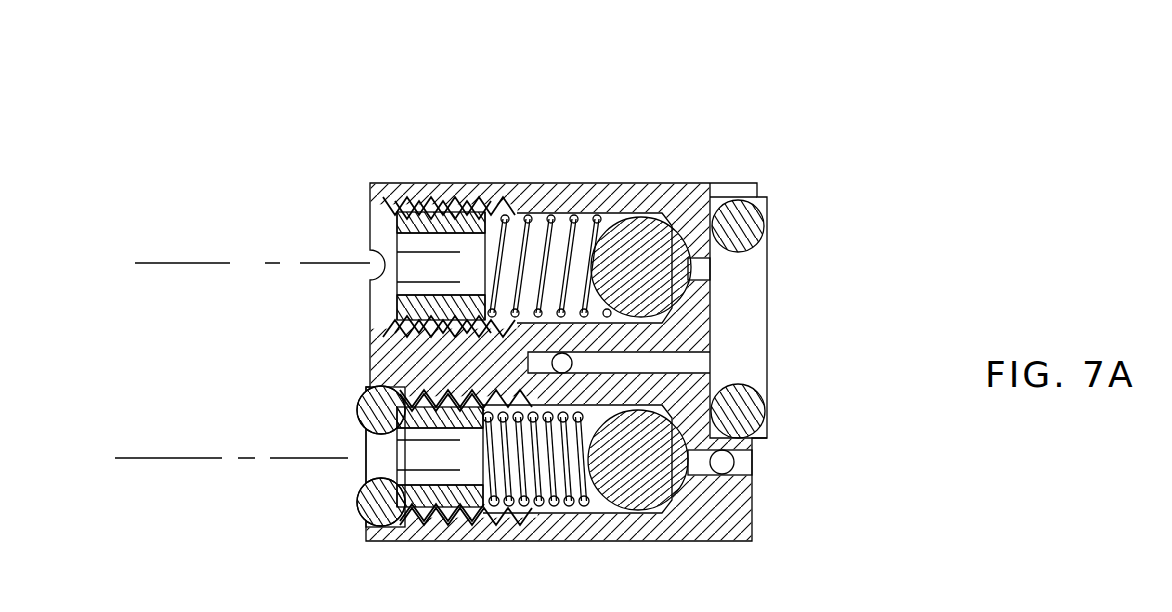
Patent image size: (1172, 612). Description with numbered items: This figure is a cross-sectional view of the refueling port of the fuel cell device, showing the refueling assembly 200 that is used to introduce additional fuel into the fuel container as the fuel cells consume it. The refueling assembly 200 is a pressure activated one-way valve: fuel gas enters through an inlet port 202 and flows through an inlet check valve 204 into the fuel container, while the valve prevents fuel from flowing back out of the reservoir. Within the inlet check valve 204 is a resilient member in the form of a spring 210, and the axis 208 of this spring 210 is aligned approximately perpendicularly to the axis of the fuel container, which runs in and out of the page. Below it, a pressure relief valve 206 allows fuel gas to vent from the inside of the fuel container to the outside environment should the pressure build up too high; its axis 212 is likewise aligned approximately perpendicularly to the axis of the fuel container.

The refueling assembly 200 is at (780, 125).
The inlet port 202 is at (573, 366).
The inlet check valve 204 is at (585, 213).
The pressure relief valve 206 is at (568, 512).
The axis 208 is at (197, 275).
The spring 210 is at (525, 213).
The axis 212 is at (163, 465).